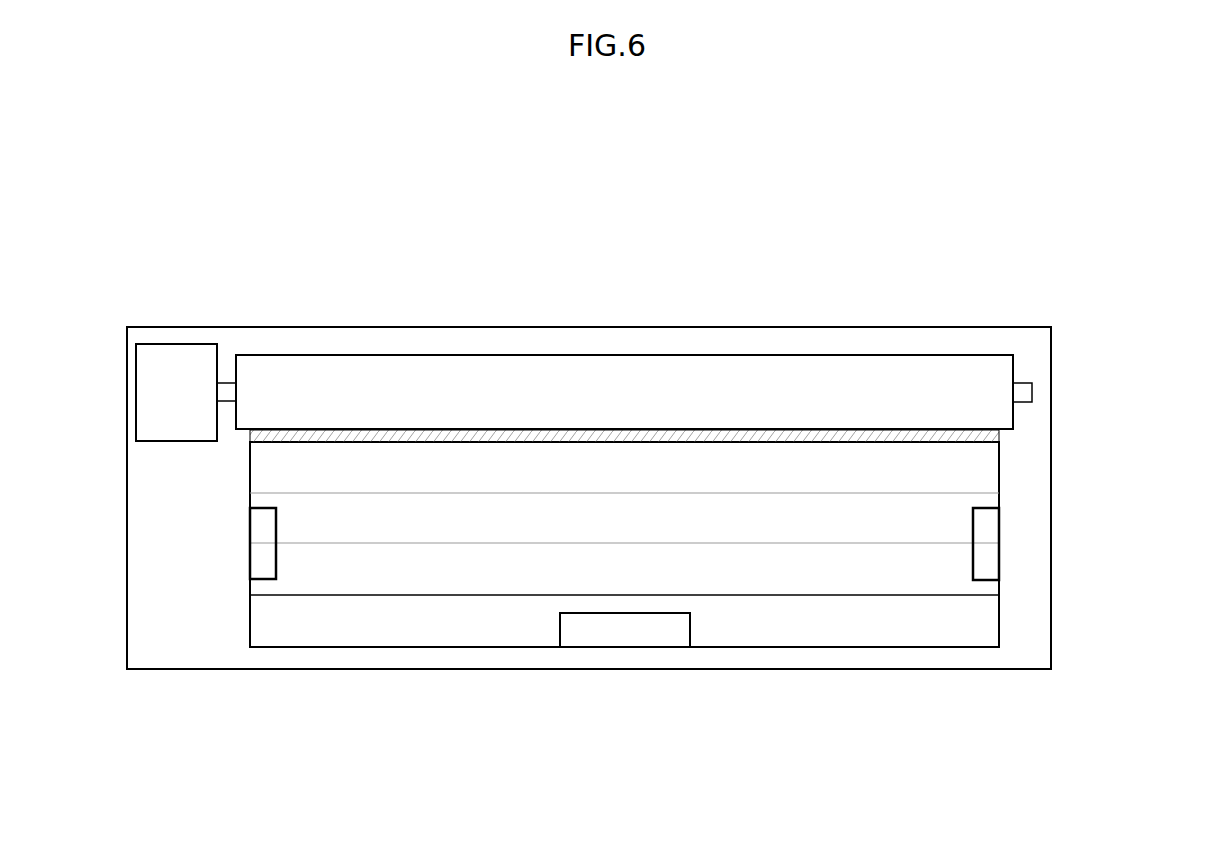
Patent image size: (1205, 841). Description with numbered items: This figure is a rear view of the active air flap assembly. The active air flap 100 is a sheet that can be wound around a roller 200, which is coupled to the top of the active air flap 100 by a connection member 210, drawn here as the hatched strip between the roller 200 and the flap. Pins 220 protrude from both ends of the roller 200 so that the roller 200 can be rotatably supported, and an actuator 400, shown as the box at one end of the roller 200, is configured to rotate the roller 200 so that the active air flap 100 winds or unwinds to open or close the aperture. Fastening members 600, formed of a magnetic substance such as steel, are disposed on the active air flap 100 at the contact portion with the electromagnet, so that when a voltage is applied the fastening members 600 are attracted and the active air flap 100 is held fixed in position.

The active air flap 100 is at (939, 587).
The roller 200 is at (582, 392).
The connection member 210 is at (993, 434).
The pins 220 is at (625, 258).
The actuator 400 is at (180, 372).
The fastening member 600 is at (611, 623).